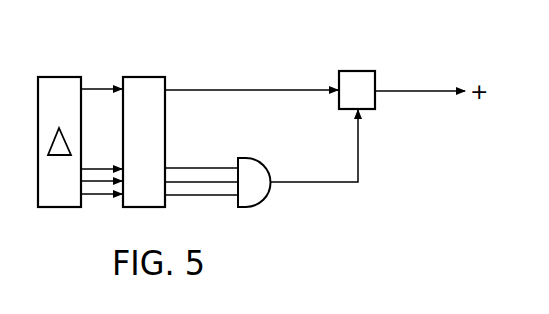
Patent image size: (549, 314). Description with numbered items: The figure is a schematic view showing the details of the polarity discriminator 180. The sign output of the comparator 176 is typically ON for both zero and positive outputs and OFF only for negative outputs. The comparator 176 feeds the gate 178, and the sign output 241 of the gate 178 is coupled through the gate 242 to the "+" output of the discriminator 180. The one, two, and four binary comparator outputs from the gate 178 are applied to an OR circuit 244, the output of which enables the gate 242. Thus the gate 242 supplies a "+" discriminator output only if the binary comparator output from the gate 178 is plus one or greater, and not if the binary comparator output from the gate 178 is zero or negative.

The comparator 176 is at (57, 77).
The gate 178 is at (143, 77).
The polarity discriminator 180 is at (275, 66).
The sign output 241 is at (270, 90).
The gate 242 is at (364, 71).
The OR circuit 244 is at (262, 159).